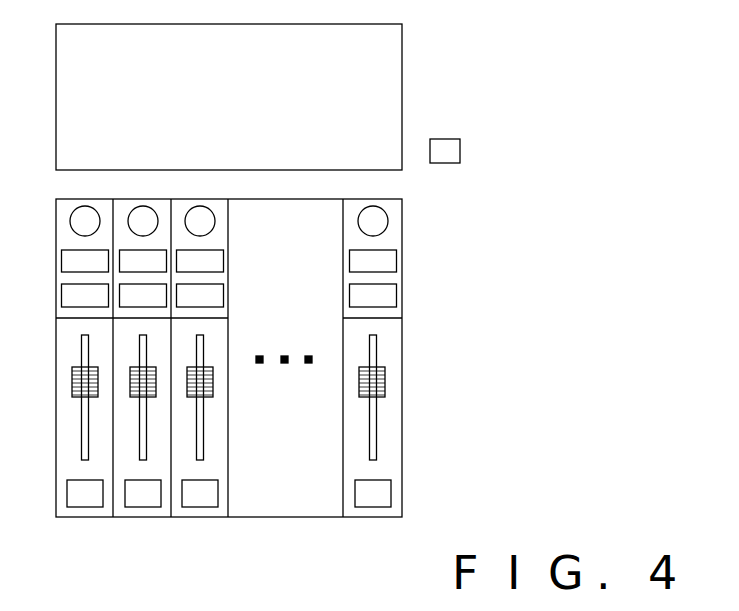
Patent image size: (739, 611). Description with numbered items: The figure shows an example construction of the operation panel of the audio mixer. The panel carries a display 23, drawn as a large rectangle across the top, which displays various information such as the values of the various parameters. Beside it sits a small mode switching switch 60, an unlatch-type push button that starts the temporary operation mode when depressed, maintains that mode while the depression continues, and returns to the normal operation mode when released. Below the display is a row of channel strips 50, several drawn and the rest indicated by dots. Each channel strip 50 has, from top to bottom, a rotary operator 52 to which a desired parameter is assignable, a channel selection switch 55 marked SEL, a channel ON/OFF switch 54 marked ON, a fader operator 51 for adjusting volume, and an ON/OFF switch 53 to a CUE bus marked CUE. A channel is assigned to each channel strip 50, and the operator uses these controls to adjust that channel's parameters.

The display 23 is at (402, 93).
The mode switching switch 60 is at (460, 143).
The channel strip 50 is at (386, 517).
The fader operator 51 is at (385, 380).
The rotary operator 52 is at (388, 221).
The ON/OFF switch to a CUE bus 53 is at (402, 493).
The channel ON/OFF switch 54 is at (396, 295).
The channel selection switch 55 is at (396, 259).